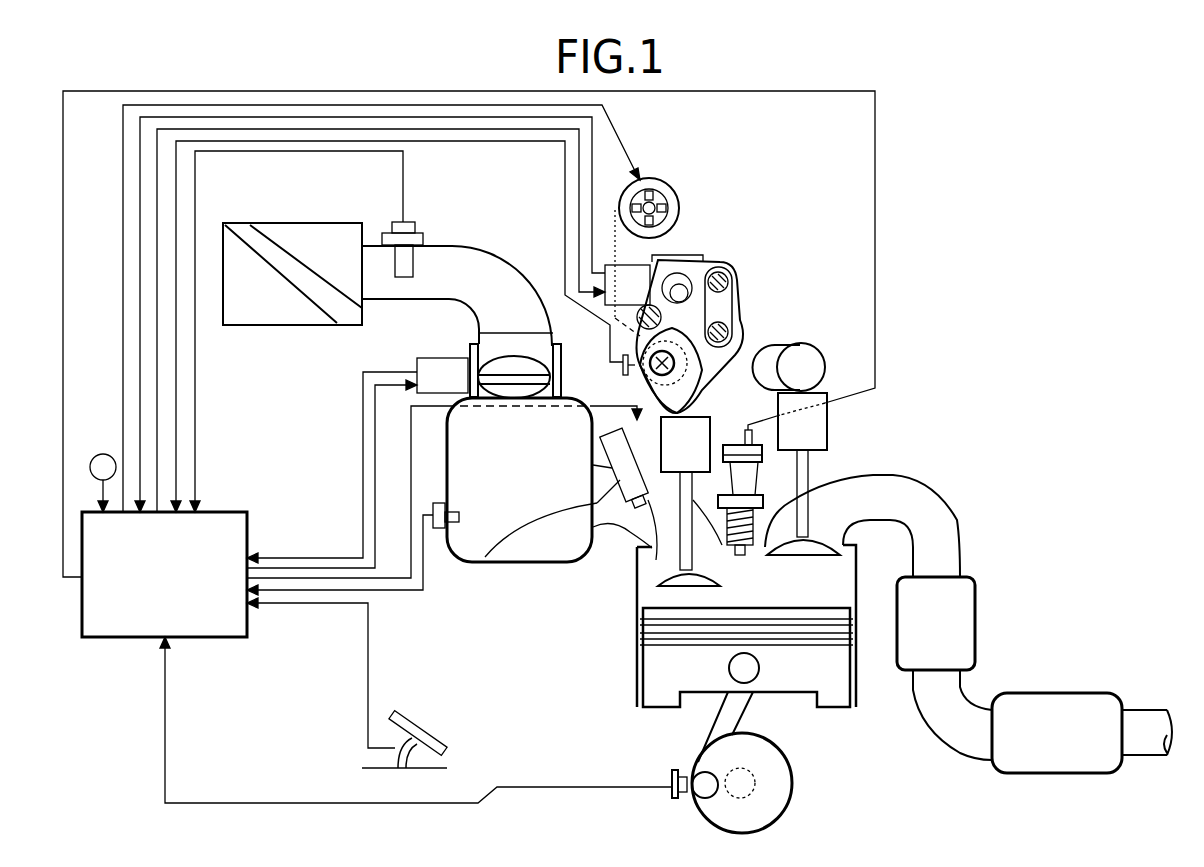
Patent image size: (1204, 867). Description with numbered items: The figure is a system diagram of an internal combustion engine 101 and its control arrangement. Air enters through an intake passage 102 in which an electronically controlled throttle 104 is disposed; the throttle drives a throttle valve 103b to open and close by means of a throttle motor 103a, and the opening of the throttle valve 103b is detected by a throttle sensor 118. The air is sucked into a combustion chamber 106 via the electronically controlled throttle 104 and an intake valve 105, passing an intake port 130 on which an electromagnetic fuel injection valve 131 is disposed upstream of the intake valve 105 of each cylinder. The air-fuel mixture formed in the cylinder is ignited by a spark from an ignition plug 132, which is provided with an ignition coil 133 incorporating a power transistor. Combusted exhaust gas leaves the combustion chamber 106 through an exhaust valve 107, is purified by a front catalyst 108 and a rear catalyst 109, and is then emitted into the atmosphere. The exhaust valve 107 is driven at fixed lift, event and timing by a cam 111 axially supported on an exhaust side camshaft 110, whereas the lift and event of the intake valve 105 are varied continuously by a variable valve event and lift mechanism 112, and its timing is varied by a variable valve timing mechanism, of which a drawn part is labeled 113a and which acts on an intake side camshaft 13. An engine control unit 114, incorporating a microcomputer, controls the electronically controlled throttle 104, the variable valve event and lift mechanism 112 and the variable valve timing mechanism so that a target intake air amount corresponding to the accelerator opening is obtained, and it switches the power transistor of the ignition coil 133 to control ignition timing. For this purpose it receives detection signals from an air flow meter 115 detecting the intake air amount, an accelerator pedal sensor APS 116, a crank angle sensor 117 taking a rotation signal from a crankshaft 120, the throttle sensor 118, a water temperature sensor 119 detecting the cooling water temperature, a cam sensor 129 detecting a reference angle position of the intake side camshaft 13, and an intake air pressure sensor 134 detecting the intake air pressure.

The internal combustion engine 101 is at (626, 669).
The intake passage 102 is at (488, 272).
The throttle motor 103a is at (433, 356).
The throttle valve 103b is at (515, 352).
The electronically controlled throttle 104 is at (356, 356).
The intake valve 105 is at (673, 540).
The combustion chamber 106 is at (817, 587).
The exhaust valve 107 is at (810, 462).
The front catalyst 108 is at (977, 603).
The rear catalyst 109 is at (1093, 707).
The exhaust side camshaft 110 is at (845, 330).
The cam 111 is at (770, 347).
The variable valve event and lift mechanism 112 is at (770, 242).
The cam sprocket 113a is at (705, 180).
The engine control unit 114 is at (223, 638).
The air flow meter 115 is at (408, 225).
The accelerator pedal sensor APS 116 is at (380, 768).
The crank angle sensor 117 is at (675, 800).
The throttle sensor 118 is at (562, 340).
The water temperature sensor 119 is at (103, 454).
The crankshaft 120 is at (755, 785).
The cam sensor 129 is at (623, 365).
The intake side camshaft 13 is at (655, 370).
The intake port 130 is at (617, 527).
The electromagnetic fuel injection valve 131 is at (485, 562).
The ignition plug 132 is at (720, 507).
The ignition coil 133 is at (742, 442).
The intake air pressure sensor 134 is at (437, 530).